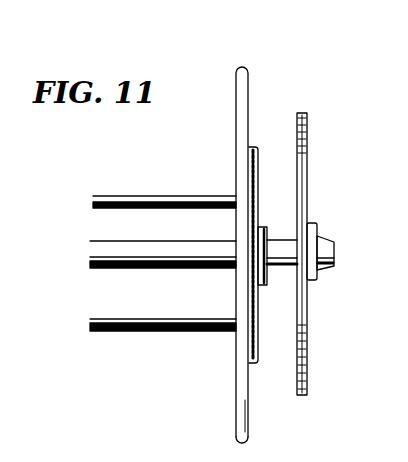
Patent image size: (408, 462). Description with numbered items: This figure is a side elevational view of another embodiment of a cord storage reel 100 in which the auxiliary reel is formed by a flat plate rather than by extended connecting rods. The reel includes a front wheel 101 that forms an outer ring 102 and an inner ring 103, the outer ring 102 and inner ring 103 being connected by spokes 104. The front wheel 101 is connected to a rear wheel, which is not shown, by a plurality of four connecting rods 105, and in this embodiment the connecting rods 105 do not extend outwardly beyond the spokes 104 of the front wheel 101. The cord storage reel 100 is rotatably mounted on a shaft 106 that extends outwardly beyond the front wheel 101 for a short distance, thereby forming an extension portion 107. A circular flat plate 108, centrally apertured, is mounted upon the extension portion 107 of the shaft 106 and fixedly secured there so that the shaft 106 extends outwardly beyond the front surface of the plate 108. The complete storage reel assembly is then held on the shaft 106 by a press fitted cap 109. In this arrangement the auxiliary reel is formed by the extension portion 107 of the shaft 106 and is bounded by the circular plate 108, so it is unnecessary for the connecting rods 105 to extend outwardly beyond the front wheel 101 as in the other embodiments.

The cord storage reel 100 is at (280, 72).
The front wheel 101 is at (241, 60).
The outer ring 102 is at (252, 421).
The inner ring 103 is at (258, 227).
The spokes 104 is at (250, 160).
The connecting rods 105 is at (140, 196).
The shaft 106 is at (150, 260).
The extension portion 107 is at (286, 265).
The circular flat plate 108 is at (308, 155).
The press fitted cap 109 is at (336, 247).